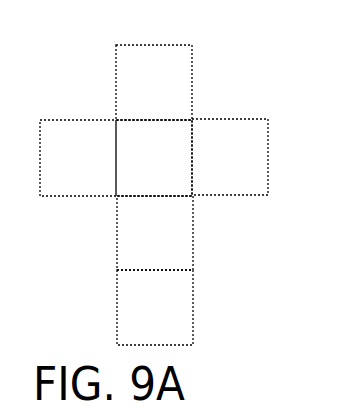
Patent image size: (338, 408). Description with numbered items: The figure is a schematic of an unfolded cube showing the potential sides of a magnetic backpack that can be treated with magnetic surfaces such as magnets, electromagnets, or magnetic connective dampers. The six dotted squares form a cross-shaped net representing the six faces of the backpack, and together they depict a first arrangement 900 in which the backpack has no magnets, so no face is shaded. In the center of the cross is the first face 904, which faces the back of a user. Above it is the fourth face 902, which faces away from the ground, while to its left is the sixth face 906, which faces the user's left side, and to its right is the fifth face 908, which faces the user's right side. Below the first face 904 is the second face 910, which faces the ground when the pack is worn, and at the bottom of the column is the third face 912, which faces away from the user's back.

The first arrangement 900 is at (224, 238).
The fourth face 902 is at (143, 88).
The first face 904 is at (140, 157).
The sixth face 906 is at (103, 143).
The fifth face 908 is at (210, 161).
The second face 910 is at (137, 238).
The third face 912 is at (143, 298).